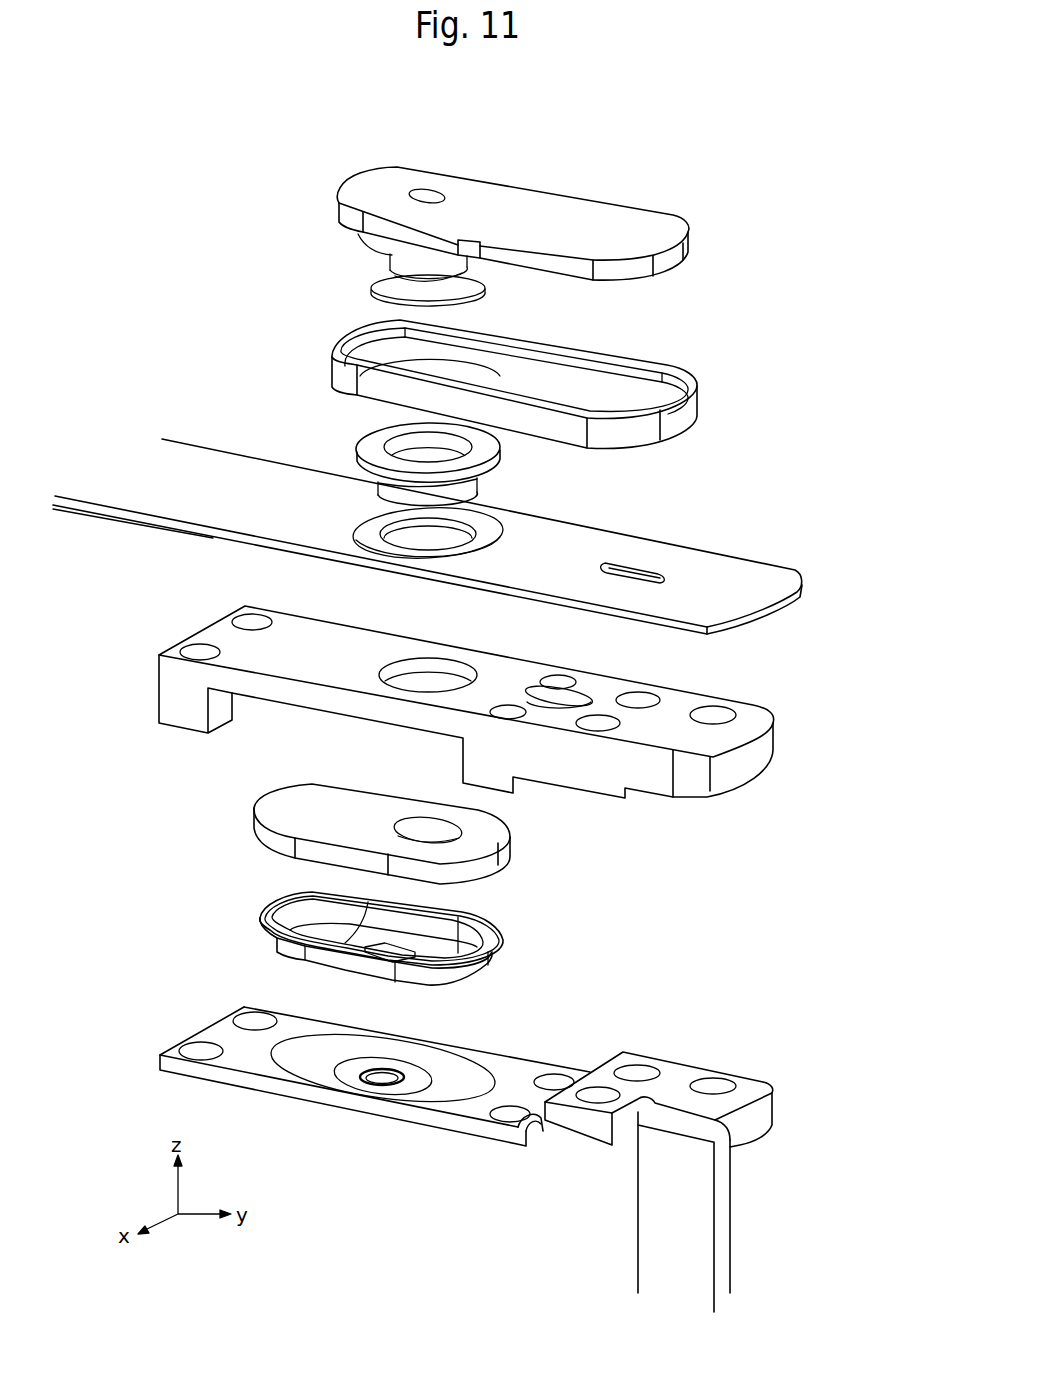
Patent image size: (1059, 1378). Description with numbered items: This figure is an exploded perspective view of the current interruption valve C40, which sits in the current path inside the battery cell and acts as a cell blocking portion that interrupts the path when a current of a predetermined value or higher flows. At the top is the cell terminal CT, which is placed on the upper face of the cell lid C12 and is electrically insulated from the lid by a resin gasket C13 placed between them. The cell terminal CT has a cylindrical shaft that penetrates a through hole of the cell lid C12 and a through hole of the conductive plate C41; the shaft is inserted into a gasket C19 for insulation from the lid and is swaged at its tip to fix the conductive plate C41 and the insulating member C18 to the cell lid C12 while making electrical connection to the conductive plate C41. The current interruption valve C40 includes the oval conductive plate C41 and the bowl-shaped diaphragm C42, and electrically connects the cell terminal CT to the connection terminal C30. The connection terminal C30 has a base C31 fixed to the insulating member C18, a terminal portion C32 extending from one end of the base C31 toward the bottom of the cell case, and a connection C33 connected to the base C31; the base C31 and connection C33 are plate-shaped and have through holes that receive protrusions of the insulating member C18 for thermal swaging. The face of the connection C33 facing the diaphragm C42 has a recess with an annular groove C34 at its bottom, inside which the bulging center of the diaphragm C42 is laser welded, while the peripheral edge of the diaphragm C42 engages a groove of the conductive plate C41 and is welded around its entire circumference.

The cell terminal CT is at (549, 160).
The resin gasket C13 is at (318, 358).
The gasket C19 is at (373, 447).
The cell lid C12 is at (751, 570).
The insulating member C18 is at (762, 780).
The current interruption valve C40 is at (300, 884).
The conductive plate C41 is at (253, 823).
The diaphragm C42 is at (330, 938).
The connection terminal C30 is at (516, 1151).
The base C31 is at (677, 1077).
The terminal portion C32 is at (662, 1201).
The connection C33 is at (375, 1093).
The annular groove C34 is at (362, 1073).